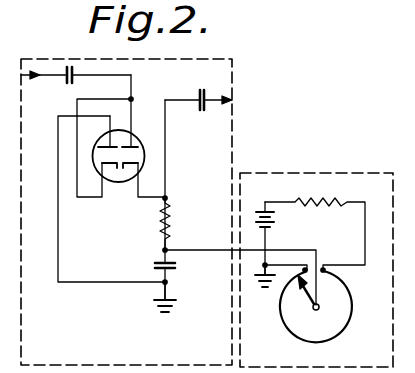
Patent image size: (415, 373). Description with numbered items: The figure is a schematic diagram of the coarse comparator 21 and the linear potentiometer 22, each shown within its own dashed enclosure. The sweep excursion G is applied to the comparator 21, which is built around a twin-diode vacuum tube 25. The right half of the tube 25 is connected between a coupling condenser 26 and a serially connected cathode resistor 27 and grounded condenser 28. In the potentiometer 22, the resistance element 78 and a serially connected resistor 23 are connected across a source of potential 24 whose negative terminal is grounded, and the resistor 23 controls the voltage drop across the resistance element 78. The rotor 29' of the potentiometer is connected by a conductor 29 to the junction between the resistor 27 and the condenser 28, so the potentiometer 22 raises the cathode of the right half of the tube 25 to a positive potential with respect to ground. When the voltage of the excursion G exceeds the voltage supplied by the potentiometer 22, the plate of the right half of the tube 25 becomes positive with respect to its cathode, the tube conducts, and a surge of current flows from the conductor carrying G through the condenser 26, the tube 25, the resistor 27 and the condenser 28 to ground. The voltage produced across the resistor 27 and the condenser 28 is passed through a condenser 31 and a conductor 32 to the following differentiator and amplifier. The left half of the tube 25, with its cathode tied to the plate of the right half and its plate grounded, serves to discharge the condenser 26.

The coarse comparator 21 is at (217, 57).
The linear potentiometer 22 is at (345, 173).
The resistor 23 is at (312, 199).
The source of potential 24 is at (278, 222).
The twin-diode vacuum tube 25 is at (136, 134).
The coupling condenser 26 is at (79, 74).
The cathode resistor 27 is at (160, 229).
The grounded condenser 28 is at (157, 268).
The conductor 29 is at (240, 277).
The rotor 29' is at (281, 307).
The condenser 31 is at (202, 113).
The conductor 32 is at (213, 95).
The resistance element 78 is at (368, 283).
The sweep excursion G is at (53, 78).